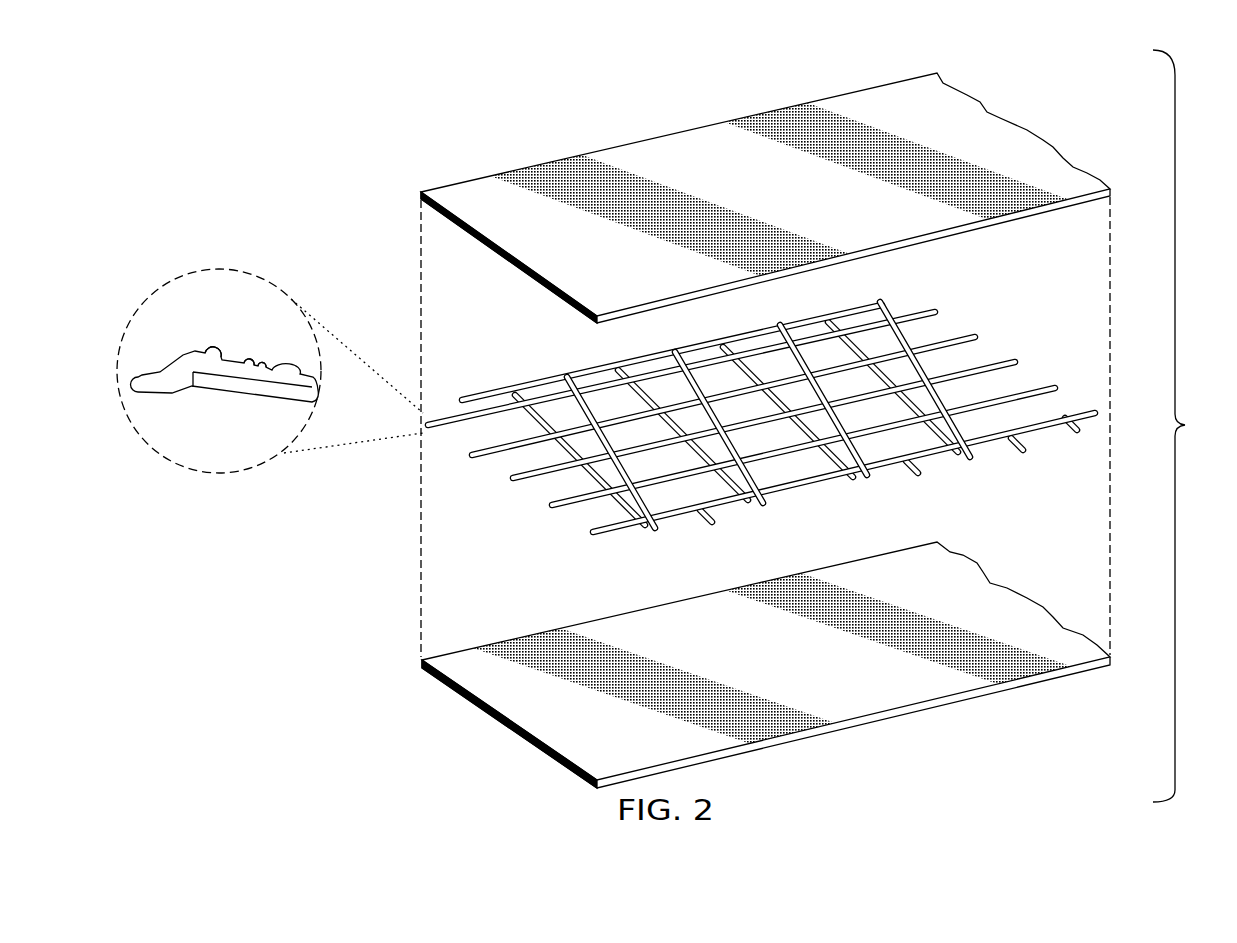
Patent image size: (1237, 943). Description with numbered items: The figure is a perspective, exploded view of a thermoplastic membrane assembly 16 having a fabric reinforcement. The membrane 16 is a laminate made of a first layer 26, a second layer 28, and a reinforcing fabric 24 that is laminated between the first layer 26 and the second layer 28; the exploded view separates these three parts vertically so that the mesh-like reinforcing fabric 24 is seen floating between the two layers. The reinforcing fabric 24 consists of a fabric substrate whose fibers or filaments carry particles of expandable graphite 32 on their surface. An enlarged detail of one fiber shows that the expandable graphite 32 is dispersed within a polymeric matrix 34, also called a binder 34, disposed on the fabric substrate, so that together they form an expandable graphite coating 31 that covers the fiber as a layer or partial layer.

The thermoplastic membrane assembly 16 is at (1185, 426).
The reinforcing fabric 24 is at (762, 396).
The first layer 26 is at (948, 127).
The second layer 28 is at (945, 585).
The expandable graphite coating 31 is at (212, 352).
The expandable graphite 32 is at (251, 362).
The polymeric matrix 34 is at (264, 366).